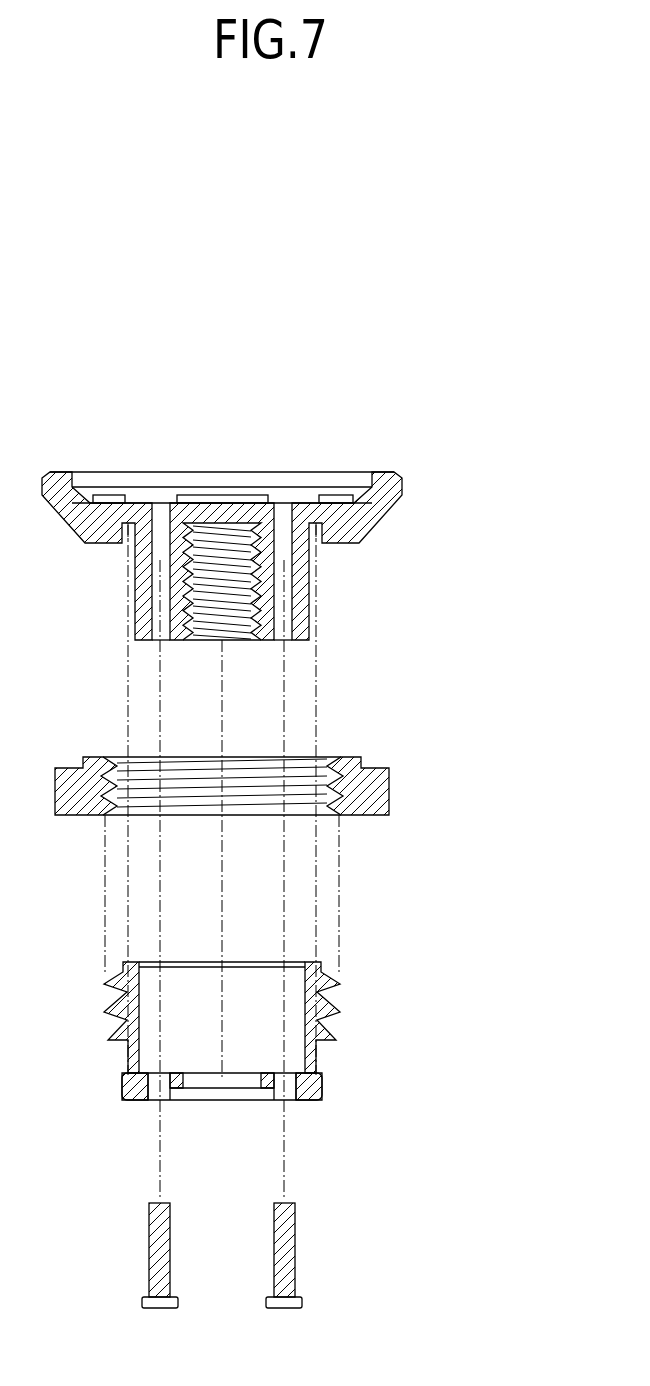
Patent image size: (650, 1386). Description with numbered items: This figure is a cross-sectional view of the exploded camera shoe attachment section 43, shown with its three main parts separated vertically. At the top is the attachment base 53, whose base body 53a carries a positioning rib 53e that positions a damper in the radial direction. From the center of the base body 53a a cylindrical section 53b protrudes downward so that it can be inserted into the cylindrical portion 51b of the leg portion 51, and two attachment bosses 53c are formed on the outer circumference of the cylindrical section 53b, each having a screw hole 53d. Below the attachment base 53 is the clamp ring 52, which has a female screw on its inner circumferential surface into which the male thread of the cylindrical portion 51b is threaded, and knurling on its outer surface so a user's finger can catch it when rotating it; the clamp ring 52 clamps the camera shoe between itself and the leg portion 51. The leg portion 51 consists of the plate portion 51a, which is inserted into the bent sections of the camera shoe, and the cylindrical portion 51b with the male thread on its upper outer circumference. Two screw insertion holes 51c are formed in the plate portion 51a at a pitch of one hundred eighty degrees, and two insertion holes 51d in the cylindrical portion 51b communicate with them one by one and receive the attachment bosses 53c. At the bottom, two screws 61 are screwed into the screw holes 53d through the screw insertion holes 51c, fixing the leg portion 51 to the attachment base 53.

The camera shoe attachment section 43 is at (271, 813).
The attachment base 53 is at (273, 557).
The base body 53a is at (400, 480).
The cylindrical section 53b is at (124, 548).
The attachment boss 53c is at (142, 628).
The screw hole 53d is at (165, 645).
The positioning rib 53e is at (118, 495).
The clamp ring 52 is at (372, 790).
The leg portion 51 is at (232, 1025).
The plate portion 51a is at (123, 1087).
The cylindrical portion 51b is at (105, 1015).
The screw insertion hole 51c is at (150, 1100).
The insertion hole 51d is at (136, 958).
The screw 61 is at (142, 1305).